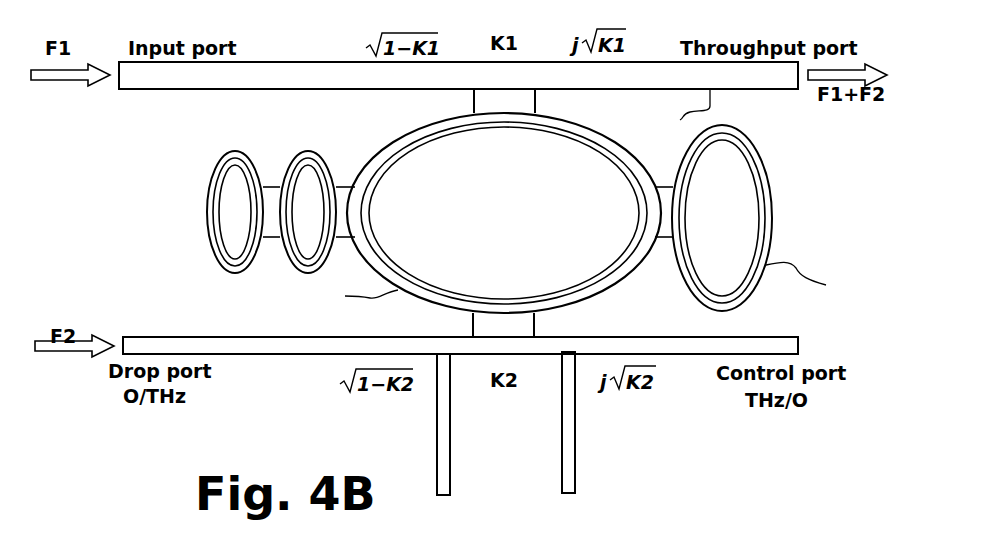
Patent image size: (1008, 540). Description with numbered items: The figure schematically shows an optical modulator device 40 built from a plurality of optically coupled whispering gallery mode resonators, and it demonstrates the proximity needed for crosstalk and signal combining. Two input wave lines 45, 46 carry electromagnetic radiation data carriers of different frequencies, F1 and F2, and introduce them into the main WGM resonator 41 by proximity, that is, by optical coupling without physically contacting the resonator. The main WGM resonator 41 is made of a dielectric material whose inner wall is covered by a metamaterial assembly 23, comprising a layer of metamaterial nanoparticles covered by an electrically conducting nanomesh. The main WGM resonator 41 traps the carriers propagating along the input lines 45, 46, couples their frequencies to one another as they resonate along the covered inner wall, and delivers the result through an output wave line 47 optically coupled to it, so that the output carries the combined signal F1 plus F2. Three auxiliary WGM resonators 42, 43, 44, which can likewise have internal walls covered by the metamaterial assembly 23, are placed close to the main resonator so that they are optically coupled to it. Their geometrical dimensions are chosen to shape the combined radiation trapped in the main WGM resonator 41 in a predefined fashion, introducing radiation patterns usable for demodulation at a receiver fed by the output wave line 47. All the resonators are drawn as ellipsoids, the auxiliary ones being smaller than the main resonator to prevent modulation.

The metamaterial assembly 23 is at (218, 207).
The optical modulator device 40 is at (138, 143).
The main WGM resonator 41 is at (402, 137).
The auxiliary WGM resonator 42 is at (304, 153).
The auxiliary WGM resonator 43 is at (230, 153).
The auxiliary WGM resonator 44 is at (772, 213).
The input wave line 45 is at (291, 62).
The input wave line 46 is at (183, 337).
The output wave line 47 is at (679, 110).